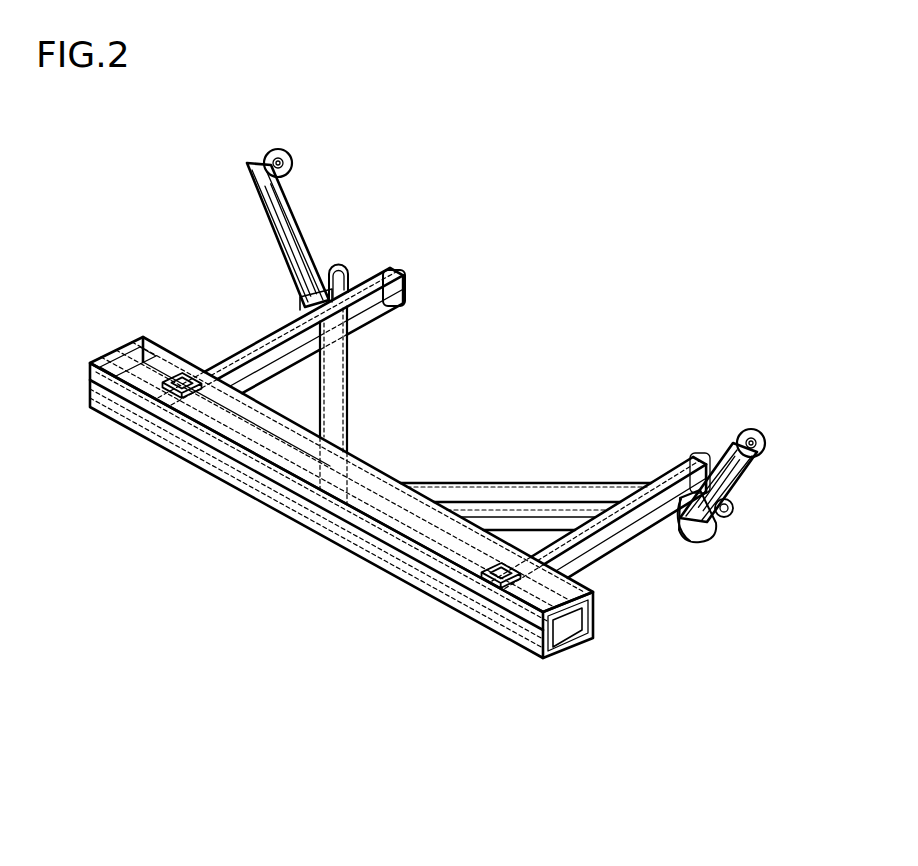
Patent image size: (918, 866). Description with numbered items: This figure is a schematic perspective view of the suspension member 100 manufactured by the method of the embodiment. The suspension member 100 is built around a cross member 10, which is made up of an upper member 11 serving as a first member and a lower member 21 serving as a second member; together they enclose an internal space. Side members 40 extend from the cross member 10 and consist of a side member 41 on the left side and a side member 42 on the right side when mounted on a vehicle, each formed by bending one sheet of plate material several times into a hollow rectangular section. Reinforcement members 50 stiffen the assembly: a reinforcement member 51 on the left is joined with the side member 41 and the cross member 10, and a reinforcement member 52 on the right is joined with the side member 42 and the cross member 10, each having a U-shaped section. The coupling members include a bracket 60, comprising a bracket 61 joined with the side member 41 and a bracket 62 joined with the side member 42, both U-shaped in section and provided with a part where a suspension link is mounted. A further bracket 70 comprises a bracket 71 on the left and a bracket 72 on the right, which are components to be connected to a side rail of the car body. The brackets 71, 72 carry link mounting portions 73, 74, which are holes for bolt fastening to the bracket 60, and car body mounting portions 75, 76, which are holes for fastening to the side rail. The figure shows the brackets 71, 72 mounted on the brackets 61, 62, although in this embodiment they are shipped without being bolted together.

The suspension member 100 is at (104, 99).
The cross member 10 is at (430, 660).
The upper member 11 is at (510, 640).
The lower member 21 is at (525, 664).
The side member 40 is at (510, 393).
The side member 41 is at (362, 328).
The side member 42 is at (650, 477).
The reinforcement member 50 is at (467, 436).
The reinforcement member 51 is at (334, 430).
The reinforcement member 52 is at (478, 493).
The bracket 60 is at (557, 348).
The bracket 61 is at (398, 304).
The bracket 62 is at (673, 476).
The bracket 70 is at (597, 306).
The bracket 71 is at (358, 214).
The bracket 72 is at (687, 425).
The link mounting portion 73 is at (298, 302).
The link mounting portion 74 is at (702, 531).
The car body mounting portion 75 is at (257, 155).
The car body mounting portion 76 is at (759, 446).